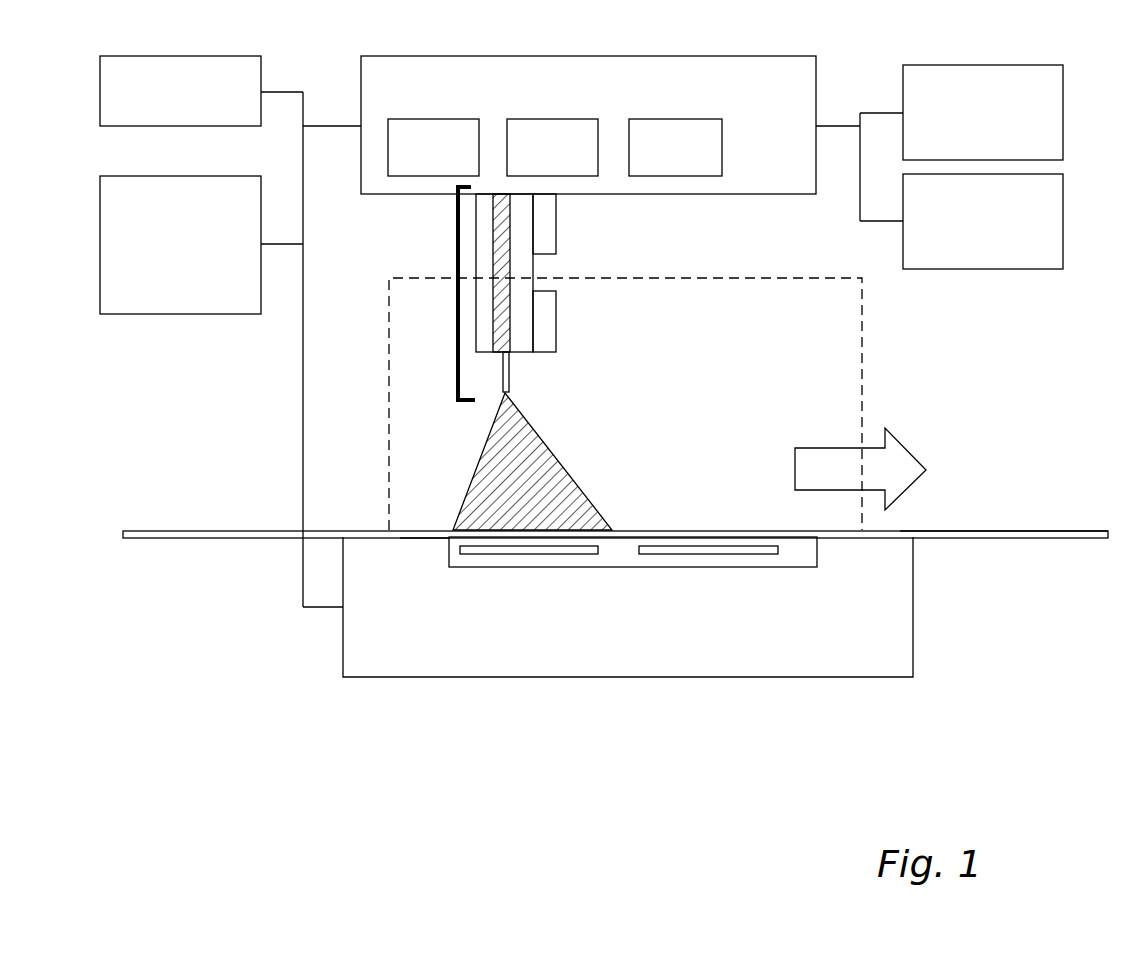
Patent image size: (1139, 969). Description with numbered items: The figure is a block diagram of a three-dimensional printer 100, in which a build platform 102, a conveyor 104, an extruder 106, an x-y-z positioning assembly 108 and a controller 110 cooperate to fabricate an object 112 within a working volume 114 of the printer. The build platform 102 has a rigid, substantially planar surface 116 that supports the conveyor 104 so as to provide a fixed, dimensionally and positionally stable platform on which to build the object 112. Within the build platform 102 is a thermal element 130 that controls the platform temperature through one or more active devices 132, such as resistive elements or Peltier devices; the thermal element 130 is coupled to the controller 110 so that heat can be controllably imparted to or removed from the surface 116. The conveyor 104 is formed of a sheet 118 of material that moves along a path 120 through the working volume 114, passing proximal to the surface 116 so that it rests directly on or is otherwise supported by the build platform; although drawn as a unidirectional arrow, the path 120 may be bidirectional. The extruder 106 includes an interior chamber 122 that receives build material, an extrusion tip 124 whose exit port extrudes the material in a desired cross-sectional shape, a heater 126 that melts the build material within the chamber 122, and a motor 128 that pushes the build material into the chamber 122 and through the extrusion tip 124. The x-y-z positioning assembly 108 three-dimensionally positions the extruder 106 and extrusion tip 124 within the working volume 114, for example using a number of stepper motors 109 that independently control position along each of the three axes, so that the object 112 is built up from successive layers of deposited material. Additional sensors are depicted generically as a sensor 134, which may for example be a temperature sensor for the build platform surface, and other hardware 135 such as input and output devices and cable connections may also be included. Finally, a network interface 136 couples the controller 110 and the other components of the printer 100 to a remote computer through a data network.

The printer 100 is at (1050, 380).
The build platform 102 is at (894, 661).
The conveyor 104 is at (183, 531).
The extruder 106 is at (458, 247).
The x-y-z positioning assembly 108 is at (437, 106).
The stepper motors 109 is at (450, 160).
The controller 110 is at (171, 228).
The object 112 is at (553, 453).
The working volume 114 is at (861, 399).
The surface 116 is at (426, 550).
The sheet 118 is at (952, 530).
The path 120 is at (847, 482).
The chamber 122 is at (480, 306).
The extrusion tip 124 is at (503, 372).
The heater 126 is at (558, 320).
The motor 128 is at (557, 225).
The thermal element 130 is at (590, 568).
The active devices 132 is at (727, 557).
The sensor 134 is at (971, 133).
The other hardware 135 is at (971, 228).
The network interface 136 is at (164, 106).